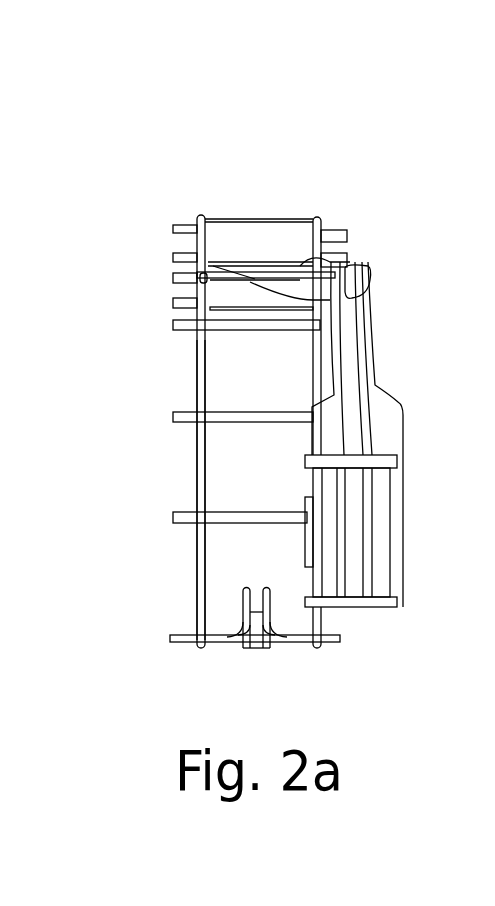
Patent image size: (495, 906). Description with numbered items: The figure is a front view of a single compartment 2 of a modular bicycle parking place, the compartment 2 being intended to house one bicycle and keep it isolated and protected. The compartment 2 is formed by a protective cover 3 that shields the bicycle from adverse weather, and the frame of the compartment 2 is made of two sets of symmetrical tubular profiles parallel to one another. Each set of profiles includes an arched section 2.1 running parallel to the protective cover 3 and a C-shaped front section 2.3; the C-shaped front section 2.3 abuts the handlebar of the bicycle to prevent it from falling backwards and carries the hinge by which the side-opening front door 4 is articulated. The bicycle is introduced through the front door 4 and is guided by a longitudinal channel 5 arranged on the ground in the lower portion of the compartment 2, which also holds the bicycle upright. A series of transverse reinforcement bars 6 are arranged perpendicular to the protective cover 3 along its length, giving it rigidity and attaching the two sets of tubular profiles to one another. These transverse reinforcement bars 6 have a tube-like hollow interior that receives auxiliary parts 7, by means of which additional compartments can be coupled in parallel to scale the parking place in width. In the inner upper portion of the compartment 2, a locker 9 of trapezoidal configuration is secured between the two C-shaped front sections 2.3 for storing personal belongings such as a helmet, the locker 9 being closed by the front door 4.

The compartment 2 is at (176, 182).
The arched section 2.1 is at (314, 244).
The C-shaped front section 2.3 is at (203, 402).
The protective cover 3 is at (259, 240).
The front door 4 is at (341, 339).
The longitudinal channel 5 is at (257, 663).
The transverse reinforcement bars 6 is at (260, 418).
The auxiliary parts 7 is at (180, 325).
The locker 9 is at (253, 297).